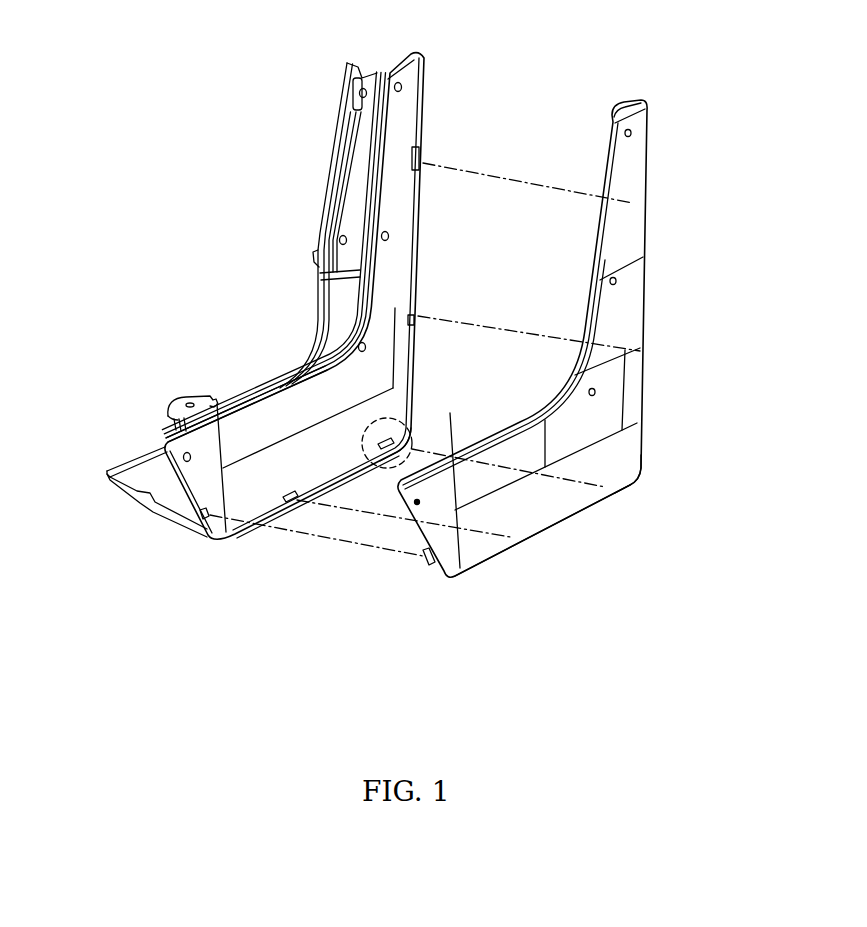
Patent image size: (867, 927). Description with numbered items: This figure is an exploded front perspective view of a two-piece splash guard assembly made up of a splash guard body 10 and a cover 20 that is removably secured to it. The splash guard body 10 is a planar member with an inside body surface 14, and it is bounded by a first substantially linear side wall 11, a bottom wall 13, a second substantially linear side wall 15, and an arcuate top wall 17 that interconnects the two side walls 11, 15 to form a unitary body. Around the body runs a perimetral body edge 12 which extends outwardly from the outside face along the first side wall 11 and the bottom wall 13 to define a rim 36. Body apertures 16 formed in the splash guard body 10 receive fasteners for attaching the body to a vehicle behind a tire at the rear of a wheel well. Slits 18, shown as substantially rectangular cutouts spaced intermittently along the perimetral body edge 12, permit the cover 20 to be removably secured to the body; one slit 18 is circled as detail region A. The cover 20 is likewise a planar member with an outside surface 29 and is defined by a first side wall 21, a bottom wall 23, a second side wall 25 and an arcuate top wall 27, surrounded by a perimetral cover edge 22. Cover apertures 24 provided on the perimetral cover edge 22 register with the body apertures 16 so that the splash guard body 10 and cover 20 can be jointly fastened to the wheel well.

The splash guard body 10 is at (187, 147).
The first side wall 11 is at (421, 240).
The perimetral body edge 12 is at (210, 537).
The bottom wall 13 is at (373, 466).
The inside body face 14 is at (253, 417).
The second side wall 15 is at (165, 513).
The body aperture 16 is at (395, 84).
The top wall 17 is at (283, 385).
The slit 18 is at (420, 155).
The detail area A is at (396, 421).
The cover 20 is at (673, 220).
The first side wall 21 is at (645, 311).
The perimetral cover edge 22 is at (538, 538).
The bottom wall 23 is at (618, 490).
The cover aperture 24 is at (631, 133).
The second side wall 25 is at (418, 497).
The top wall 27 is at (596, 290).
The outside face 29 is at (560, 500).
The rim 36 is at (117, 475).